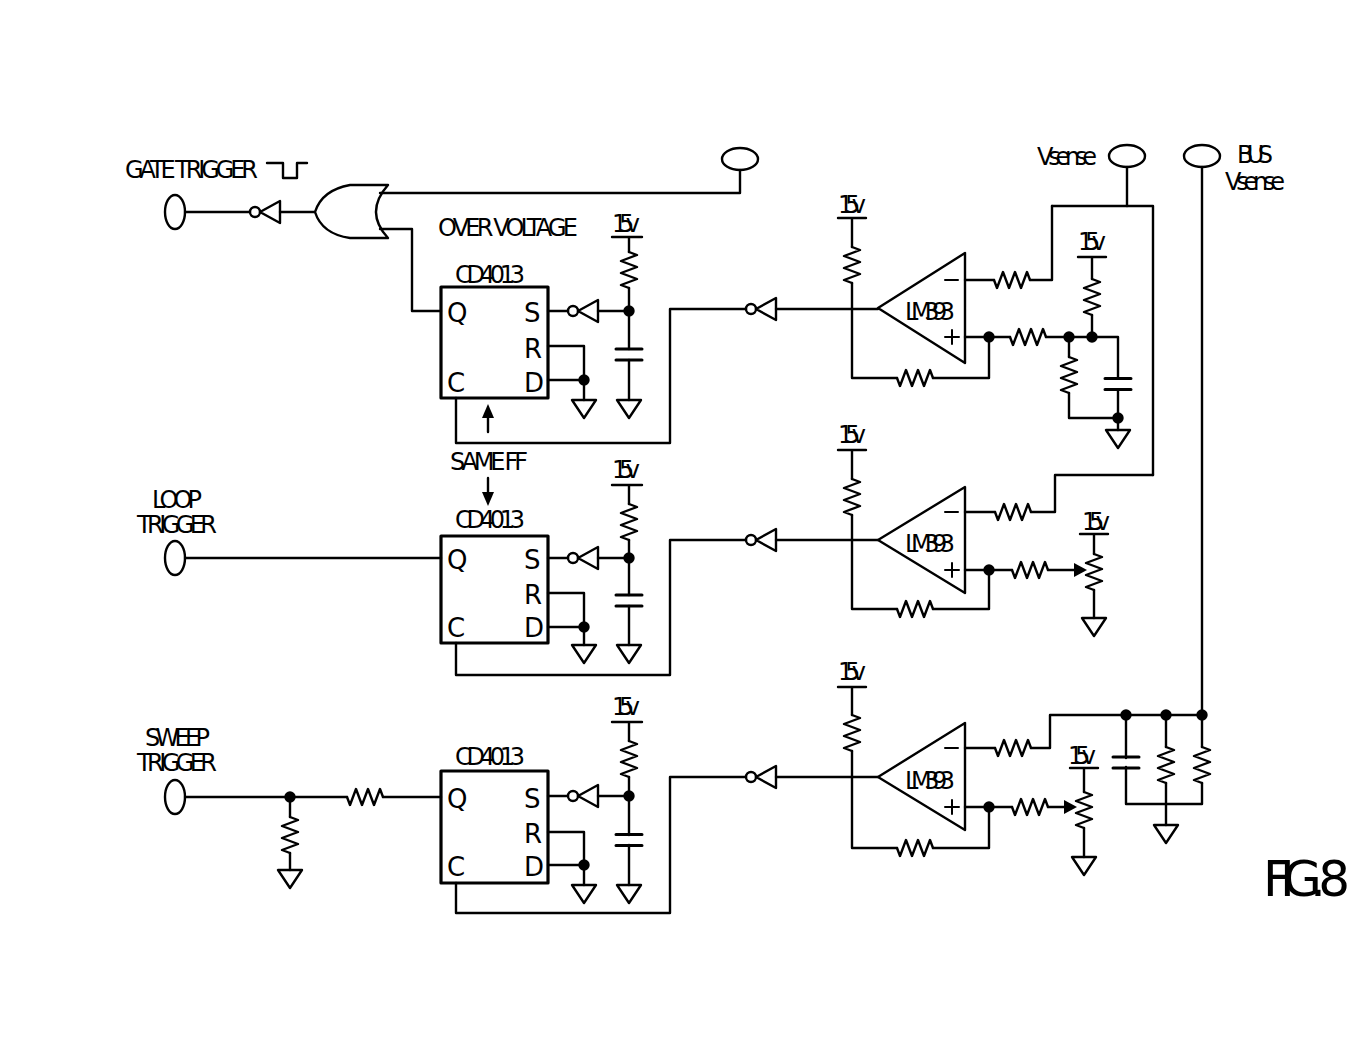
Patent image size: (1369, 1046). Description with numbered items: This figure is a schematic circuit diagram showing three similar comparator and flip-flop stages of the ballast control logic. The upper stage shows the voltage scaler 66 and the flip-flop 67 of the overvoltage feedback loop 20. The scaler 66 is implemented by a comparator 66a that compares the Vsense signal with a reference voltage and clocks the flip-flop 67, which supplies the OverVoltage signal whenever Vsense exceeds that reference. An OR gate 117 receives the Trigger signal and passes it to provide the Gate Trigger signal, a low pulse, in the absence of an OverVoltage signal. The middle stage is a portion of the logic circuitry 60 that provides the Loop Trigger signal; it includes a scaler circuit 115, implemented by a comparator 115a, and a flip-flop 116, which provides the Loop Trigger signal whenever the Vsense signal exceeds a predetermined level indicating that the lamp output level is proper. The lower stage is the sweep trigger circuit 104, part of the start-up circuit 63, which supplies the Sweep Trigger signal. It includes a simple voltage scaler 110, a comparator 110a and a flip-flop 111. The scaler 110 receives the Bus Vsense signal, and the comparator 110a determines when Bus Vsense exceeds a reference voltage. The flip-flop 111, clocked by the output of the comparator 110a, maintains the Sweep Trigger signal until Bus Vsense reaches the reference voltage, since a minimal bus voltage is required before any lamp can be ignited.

The overvoltage feedback loop 20 is at (1057, 204).
The logic circuitry 60 is at (877, 170).
The start-up circuit 63 is at (1033, 715).
The voltage scaler 66 is at (926, 277).
The comparator 66a is at (926, 275).
The flip-flop 67 is at (441, 358).
The sweep trigger circuit 104 is at (740, 736).
The voltage scaler 110 is at (1165, 692).
The comparator 110a is at (925, 748).
The flip-flop 111 is at (441, 846).
The scaler circuit 115 is at (953, 509).
The comparator 115a is at (925, 512).
The flip-flop 116 is at (441, 607).
The OR gate 117 is at (353, 230).